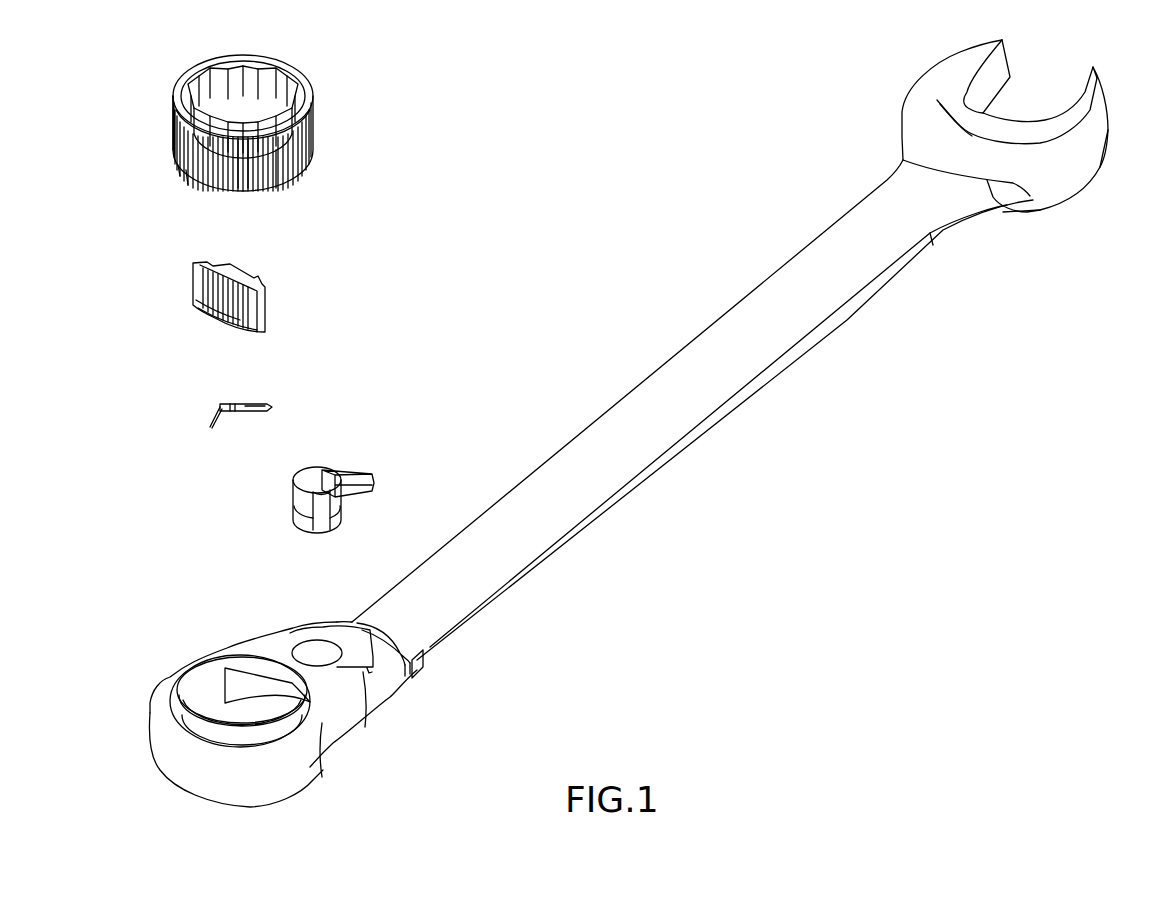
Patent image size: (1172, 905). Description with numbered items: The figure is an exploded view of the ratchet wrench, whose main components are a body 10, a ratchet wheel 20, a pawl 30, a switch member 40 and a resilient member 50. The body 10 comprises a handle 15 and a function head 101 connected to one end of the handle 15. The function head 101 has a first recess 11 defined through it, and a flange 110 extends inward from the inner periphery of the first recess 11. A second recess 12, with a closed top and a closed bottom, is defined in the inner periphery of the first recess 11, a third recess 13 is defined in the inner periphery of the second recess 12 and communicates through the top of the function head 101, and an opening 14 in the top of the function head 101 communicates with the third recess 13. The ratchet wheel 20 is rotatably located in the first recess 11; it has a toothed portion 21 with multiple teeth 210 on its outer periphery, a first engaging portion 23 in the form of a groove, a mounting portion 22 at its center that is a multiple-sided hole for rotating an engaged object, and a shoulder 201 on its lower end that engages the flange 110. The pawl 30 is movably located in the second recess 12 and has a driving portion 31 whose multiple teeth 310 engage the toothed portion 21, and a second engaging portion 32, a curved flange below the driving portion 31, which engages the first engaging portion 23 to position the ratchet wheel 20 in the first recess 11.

The body 10 is at (576, 507).
The function head 101 is at (307, 760).
The first recess 11 is at (188, 682).
The flange 110 is at (193, 713).
The second recess 12 is at (250, 677).
The third recess 13 is at (303, 650).
The opening 14 is at (322, 632).
The handle 15 is at (440, 650).
The ratchet wheel 20 is at (182, 77).
The shoulder 201 is at (282, 182).
The toothed portion 21 is at (177, 155).
The teeth 210 is at (203, 183).
The mounting portion 22 is at (272, 77).
The first engaging portion 23 is at (243, 183).
The pawl 30 is at (255, 287).
The driving portion 31 is at (207, 288).
The teeth 310 is at (197, 310).
The second engaging portion 32 is at (225, 322).
The switch member 40 is at (350, 472).
The resilient member 50 is at (257, 403).